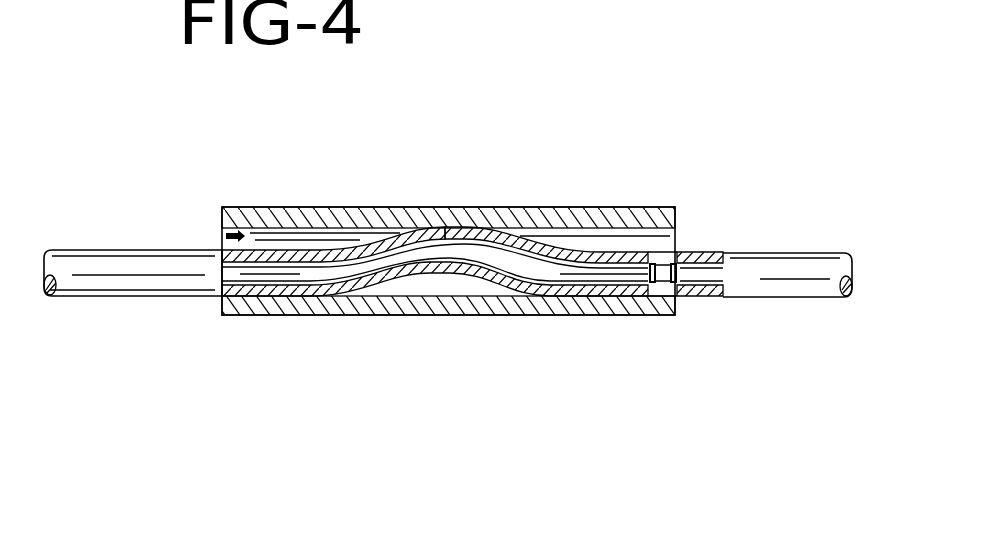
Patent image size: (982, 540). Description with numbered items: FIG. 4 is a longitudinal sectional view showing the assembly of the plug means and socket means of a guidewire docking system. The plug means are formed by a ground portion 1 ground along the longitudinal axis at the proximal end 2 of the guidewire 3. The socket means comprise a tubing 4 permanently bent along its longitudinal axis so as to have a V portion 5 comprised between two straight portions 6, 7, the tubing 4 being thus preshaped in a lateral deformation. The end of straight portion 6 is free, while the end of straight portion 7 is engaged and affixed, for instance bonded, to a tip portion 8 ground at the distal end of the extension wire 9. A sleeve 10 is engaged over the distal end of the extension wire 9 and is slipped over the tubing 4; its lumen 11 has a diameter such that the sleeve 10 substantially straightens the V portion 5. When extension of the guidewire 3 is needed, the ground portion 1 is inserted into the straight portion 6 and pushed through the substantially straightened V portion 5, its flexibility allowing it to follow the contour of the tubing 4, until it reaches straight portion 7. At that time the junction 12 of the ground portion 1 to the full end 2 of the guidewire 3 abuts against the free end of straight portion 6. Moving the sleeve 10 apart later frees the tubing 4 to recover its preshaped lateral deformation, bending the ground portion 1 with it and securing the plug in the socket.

The ground portion 1 is at (316, 270).
The proximal end 2 is at (204, 307).
The guidewire 3 is at (88, 262).
The tubing 4 is at (541, 238).
The V portion 5 is at (488, 279).
The straight portion 6 is at (287, 254).
The straight portion 7 is at (646, 250).
The tip portion 8 is at (703, 278).
The extension wire 9 is at (786, 262).
The sleeve 10 is at (427, 212).
The lumen 11 is at (222, 232).
The junction 12 is at (233, 290).